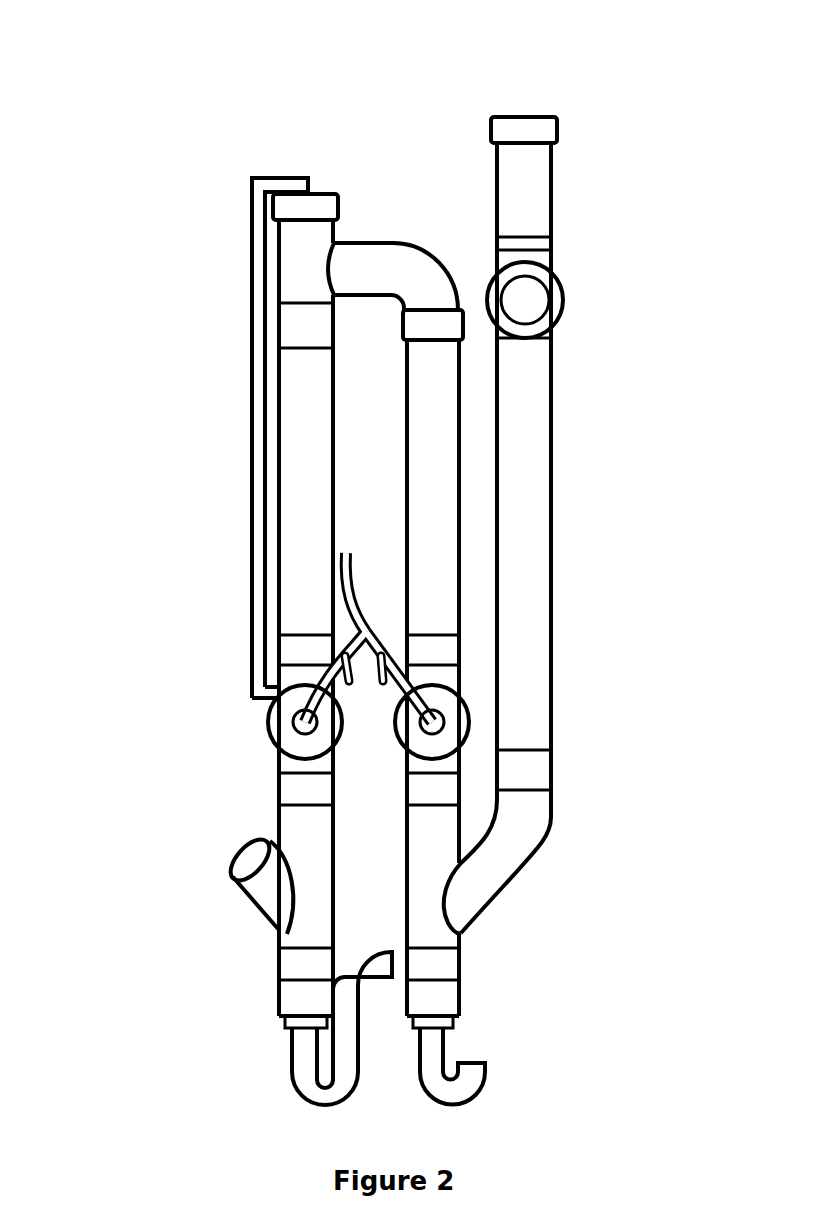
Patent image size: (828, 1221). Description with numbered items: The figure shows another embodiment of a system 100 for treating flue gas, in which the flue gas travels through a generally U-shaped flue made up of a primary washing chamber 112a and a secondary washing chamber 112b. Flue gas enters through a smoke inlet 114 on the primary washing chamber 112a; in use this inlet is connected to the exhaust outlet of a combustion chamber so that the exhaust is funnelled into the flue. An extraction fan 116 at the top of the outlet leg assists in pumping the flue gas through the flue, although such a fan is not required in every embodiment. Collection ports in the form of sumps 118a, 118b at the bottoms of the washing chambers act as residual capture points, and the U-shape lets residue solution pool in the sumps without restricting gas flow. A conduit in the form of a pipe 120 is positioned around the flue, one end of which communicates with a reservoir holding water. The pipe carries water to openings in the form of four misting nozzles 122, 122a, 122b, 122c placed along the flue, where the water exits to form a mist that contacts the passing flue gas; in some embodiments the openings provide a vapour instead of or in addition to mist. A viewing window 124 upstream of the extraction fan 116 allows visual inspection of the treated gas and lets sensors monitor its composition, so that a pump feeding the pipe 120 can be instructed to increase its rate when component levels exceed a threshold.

The system 100 is at (374, 563).
The primary washing chamber 112a is at (296, 434).
The secondary washing chamber 112b is at (434, 465).
The smoke inlet 114 is at (250, 860).
The extraction fan 116 is at (531, 114).
The first drain trap 118a is at (368, 963).
The second drain trap 118b is at (469, 1080).
The pipe 120 is at (303, 505).
The misting nozzles 122 is at (350, 609).
The first hose clip 122a is at (291, 720).
The hose bracket 122b is at (281, 175).
The second hose clip 122c is at (446, 721).
The viewing window 124 is at (530, 299).